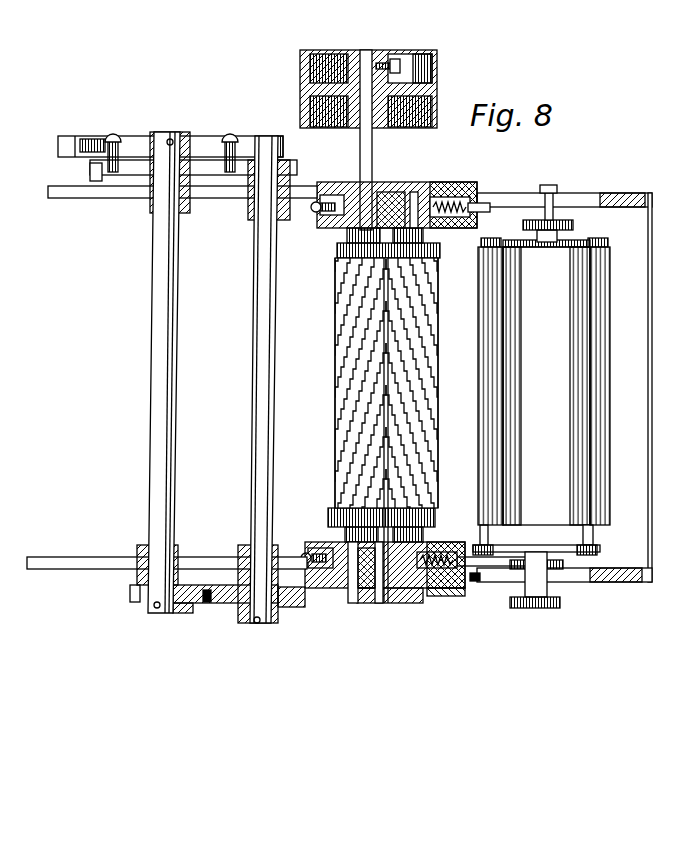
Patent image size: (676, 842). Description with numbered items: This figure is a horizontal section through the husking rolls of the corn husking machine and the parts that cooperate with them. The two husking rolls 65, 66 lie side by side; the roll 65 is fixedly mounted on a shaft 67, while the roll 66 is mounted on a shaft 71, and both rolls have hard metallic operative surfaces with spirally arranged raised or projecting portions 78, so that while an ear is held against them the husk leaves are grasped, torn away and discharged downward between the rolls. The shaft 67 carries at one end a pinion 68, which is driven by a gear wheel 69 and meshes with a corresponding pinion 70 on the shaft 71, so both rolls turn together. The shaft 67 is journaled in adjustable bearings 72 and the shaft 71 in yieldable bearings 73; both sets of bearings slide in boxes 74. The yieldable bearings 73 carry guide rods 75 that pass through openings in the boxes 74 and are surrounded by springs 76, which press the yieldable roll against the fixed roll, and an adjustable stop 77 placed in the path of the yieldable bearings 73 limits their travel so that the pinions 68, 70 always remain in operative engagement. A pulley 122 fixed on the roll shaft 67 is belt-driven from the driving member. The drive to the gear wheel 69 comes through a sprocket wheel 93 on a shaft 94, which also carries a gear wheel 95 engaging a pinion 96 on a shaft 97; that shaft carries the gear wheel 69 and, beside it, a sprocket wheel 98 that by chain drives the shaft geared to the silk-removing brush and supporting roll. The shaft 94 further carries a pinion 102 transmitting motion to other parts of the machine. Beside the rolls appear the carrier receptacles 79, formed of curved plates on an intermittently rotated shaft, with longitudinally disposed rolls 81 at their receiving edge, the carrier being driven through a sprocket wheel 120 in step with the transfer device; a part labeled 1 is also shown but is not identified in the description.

The rod 1 is at (75, 557).
The husking roll 65 is at (345, 345).
The husking roll 66 is at (432, 372).
The shaft 67 is at (372, 178).
The pinion 68 is at (375, 605).
The gear wheel 69 is at (292, 607).
The pinion 70 is at (415, 600).
The shaft 71 is at (420, 183).
The adjustable bearings 72 is at (345, 230).
The yieldable bearings 73 is at (467, 185).
The boxes 74 is at (312, 215).
The guide rods 75 is at (490, 203).
The springs 76 is at (455, 230).
The adjustable stop 77 is at (442, 605).
The raised or projecting portions 78 is at (350, 300).
The receptacles 79 is at (533, 437).
The longitudinally disposed rolls 81 is at (480, 478).
The sprocket wheel 93 is at (105, 137).
The shaft 94 is at (158, 300).
The gear wheel 95 is at (133, 175).
The pinion 96 is at (245, 160).
The shaft 97 is at (255, 280).
The sprocket wheel 98 is at (212, 603).
The pinion 102 is at (132, 600).
The sprocket wheel 120 is at (562, 602).
The pulley 122 is at (437, 62).